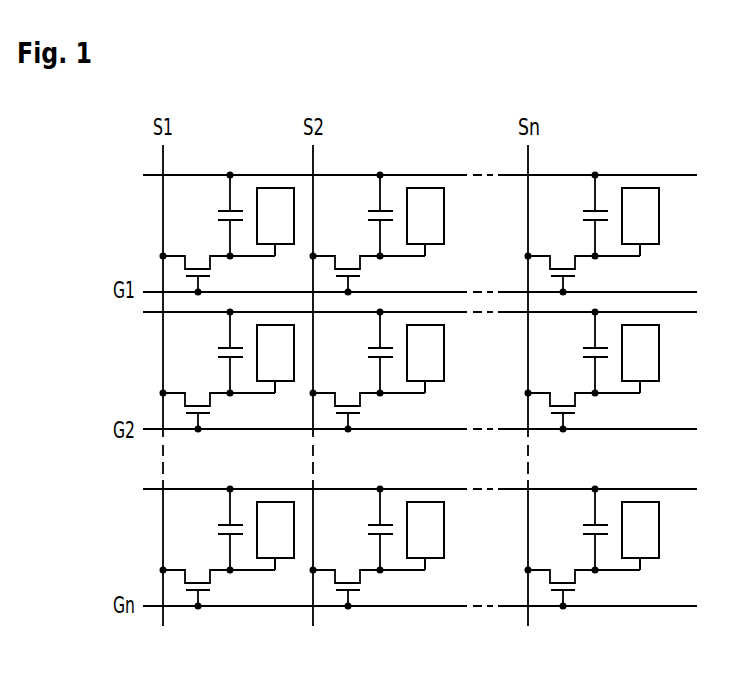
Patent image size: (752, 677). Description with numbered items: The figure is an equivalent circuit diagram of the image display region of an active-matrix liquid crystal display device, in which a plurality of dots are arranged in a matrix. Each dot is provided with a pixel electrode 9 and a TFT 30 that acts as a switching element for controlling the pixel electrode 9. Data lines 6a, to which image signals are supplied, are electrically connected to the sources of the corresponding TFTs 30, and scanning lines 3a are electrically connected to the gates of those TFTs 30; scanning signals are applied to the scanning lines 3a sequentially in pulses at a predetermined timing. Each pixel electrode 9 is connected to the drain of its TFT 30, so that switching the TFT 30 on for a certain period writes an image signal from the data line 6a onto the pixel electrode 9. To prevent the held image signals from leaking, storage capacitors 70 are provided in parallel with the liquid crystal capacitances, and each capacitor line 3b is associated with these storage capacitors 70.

The scanning line 3a is at (147, 292).
The capacitor line 3b is at (147, 175).
The data line 6a is at (165, 153).
The pixel electrode 9 is at (277, 197).
The storage capacitor 70 is at (217, 216).
The TFT 30 is at (217, 275).